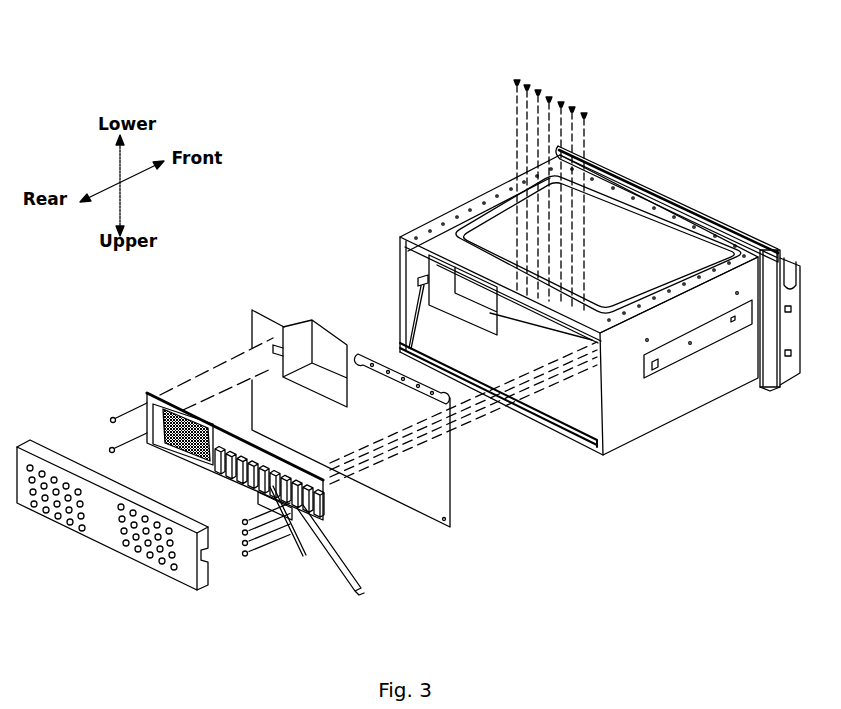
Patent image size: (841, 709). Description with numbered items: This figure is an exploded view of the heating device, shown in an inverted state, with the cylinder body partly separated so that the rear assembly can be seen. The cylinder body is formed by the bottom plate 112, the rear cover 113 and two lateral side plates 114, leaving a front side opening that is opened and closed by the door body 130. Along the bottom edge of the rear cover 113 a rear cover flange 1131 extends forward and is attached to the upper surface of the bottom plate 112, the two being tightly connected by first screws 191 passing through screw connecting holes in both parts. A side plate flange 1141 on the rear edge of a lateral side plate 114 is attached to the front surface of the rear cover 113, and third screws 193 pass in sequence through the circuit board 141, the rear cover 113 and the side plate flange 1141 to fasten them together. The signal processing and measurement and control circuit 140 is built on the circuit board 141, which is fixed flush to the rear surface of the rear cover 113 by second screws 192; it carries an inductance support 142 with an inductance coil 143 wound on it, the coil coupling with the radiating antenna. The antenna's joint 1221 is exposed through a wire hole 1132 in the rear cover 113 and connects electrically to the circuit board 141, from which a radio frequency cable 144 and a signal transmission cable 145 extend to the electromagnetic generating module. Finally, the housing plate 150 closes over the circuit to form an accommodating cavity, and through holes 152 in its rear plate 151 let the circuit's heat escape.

The bottom plate 112 is at (447, 237).
The rear cover 113 is at (246, 326).
The lateral side plate 114 is at (668, 412).
The door body 130 is at (772, 252).
The signal processing and measurement and control circuit 140 is at (148, 390).
The circuit board 141 is at (241, 446).
The inductance support 142 is at (210, 462).
The inductance coil 143 is at (180, 450).
The radio frequency cable 144 is at (305, 530).
The signal transmission cable 145 is at (340, 562).
The housing plate 150 is at (27, 432).
The rear plate 151 is at (102, 527).
The through holes 152 is at (36, 510).
The first screws 191 is at (528, 86).
The second screws 192 is at (112, 417).
The third screws 193 is at (245, 558).
The rear cover flange 1131 is at (359, 352).
The wire hole 1132 is at (284, 350).
The side plate flange 1141 is at (590, 446).
The joint 1221 is at (422, 281).